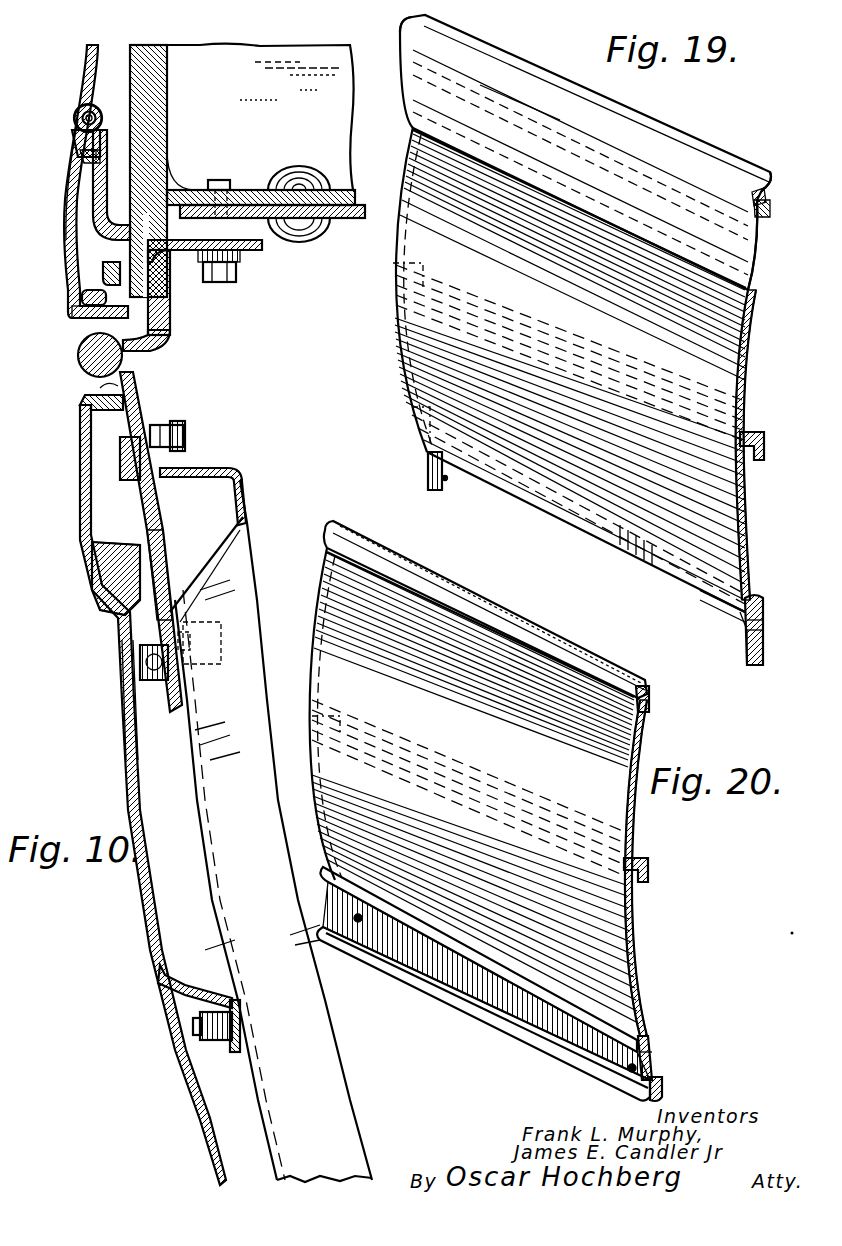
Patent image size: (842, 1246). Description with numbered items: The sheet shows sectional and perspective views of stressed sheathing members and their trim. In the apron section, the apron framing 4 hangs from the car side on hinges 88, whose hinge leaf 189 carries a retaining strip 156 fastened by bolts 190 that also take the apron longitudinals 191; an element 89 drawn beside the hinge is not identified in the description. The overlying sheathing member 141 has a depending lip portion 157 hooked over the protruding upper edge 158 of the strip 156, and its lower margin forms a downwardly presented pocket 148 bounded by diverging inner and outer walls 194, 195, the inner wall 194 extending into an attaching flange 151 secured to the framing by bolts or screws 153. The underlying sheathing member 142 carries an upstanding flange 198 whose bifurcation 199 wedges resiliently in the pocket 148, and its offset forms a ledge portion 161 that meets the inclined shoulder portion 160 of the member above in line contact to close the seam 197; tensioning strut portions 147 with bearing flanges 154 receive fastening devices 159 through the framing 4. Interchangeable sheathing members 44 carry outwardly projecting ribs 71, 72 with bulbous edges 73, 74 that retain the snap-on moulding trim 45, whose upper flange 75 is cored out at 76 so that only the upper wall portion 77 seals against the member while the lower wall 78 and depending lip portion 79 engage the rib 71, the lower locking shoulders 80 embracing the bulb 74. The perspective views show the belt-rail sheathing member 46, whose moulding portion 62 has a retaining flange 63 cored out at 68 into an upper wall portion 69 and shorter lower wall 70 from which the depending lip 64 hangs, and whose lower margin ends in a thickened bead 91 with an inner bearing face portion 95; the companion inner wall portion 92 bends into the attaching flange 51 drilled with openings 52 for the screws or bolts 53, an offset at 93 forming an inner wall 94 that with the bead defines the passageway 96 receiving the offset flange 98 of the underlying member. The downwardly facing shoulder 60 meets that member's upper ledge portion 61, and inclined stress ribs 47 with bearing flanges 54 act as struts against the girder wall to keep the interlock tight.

In FIG. 10, the apron framing 4 is at (330, 1067).
In FIG. 10, the sheathing member 44 is at (86, 50).
In FIG. 10, the moulding trim 45 is at (67, 217).
In FIG. 19, the sheathing member 46 is at (393, 324).
In FIG. 19, the stress rib 47 is at (747, 437).
In FIG. 20, the stress rib 47 is at (647, 863).
In FIG. 19, the attaching flange 51 is at (555, 550).
In FIG. 19, the opening 52 is at (432, 490).
In FIG. 20, the opening 52 is at (356, 924).
In FIG. 10, the screw or bolt 53 is at (103, 272).
In FIG. 19, the bearing flange 54 is at (768, 462).
In FIG. 20, the bearing flange 54 is at (649, 879).
In FIG. 19, the downwardly facing shoulder 60 is at (746, 627).
In FIG. 20, the upper ledge portion 61 is at (330, 550).
In FIG. 19, the moulding portion 62 is at (403, 97).
In FIG. 19, the retaining flange 63 is at (723, 153).
In FIG. 19, the depending lip 64 is at (757, 220).
In FIG. 19, the cored-out portion 68 is at (765, 195).
In FIG. 19, the upper wall portion 69 is at (763, 190).
In FIG. 19, the lower wall 70 is at (770, 208).
In FIG. 10, the rib 71 is at (66, 180).
In FIG. 20, the rib 71 is at (652, 1052).
In FIG. 10, the rib 72 is at (83, 296).
In FIG. 20, the rib 72 is at (662, 1092).
In FIG. 10, the bulbous edge 73 is at (82, 153).
In FIG. 20, the bulbous edge 73 is at (648, 1037).
In FIG. 10, the bulbous edge 74 is at (76, 312).
In FIG. 20, the bulbous edge 74 is at (480, 1030).
In FIG. 10, the flange 75 is at (77, 118).
In FIG. 10, the cored-out portion 76 is at (95, 120).
In FIG. 10, the upper wall portion 77 is at (78, 106).
In FIG. 10, the lower wall 78 is at (78, 142).
In FIG. 10, the depending lip portion 79 is at (98, 144).
In FIG. 10, the shoulder 80 is at (78, 352).
In FIG. 10, the hinge 88 is at (135, 347).
In FIG. 10, the strip 89 is at (140, 375).
In FIG. 19, the bead portion 91 is at (749, 622).
In FIG. 19, the inner wall portion 92 is at (752, 590).
In FIG. 19, the offset 93 is at (762, 624).
In FIG. 19, the inner wall 94 is at (775, 600).
In FIG. 20, the inner wall 94 is at (631, 967).
In FIG. 19, the inner bearing face portion 95 is at (746, 616).
In FIG. 19, the passageway 96 is at (513, 107).
In FIG. 20, the offset flange 98 is at (553, 640).
In FIG. 10, the sheathing member 141 is at (80, 510).
In FIG. 10, the underlying sheathing member 142 is at (143, 920).
In FIG. 10, the tensioning strut portion 147 is at (193, 975).
In FIG. 10, the elongated pocket 148 is at (133, 550).
In FIG. 10, the attaching flange 151 is at (153, 680).
In FIG. 10, the bolt or screw 153 is at (192, 680).
In FIG. 10, the bearing flange 154 is at (233, 1050).
In FIG. 10, the retaining strip 156 is at (118, 460).
In FIG. 10, the depending lip portion 157 is at (118, 383).
In FIG. 10, the protruding upper edge 158 is at (80, 430).
In FIG. 10, the fastening device 159 is at (193, 1027).
In FIG. 10, the shoulder portion 160 is at (120, 615).
In FIG. 10, the ledge portion 161 is at (123, 640).
In FIG. 10, the hinge leaf 189 is at (98, 388).
In FIG. 10, the bolt 190 is at (174, 436).
In FIG. 10, the apron longitudinal 191 is at (213, 460).
In FIG. 10, the inner wall 194 is at (182, 552).
In FIG. 10, the outer wall 195 is at (110, 600).
In FIG. 10, the seam 197 is at (117, 623).
In FIG. 10, the upstanding flange 198 is at (100, 582).
In FIG. 10, the bifurcation 199 is at (92, 548).